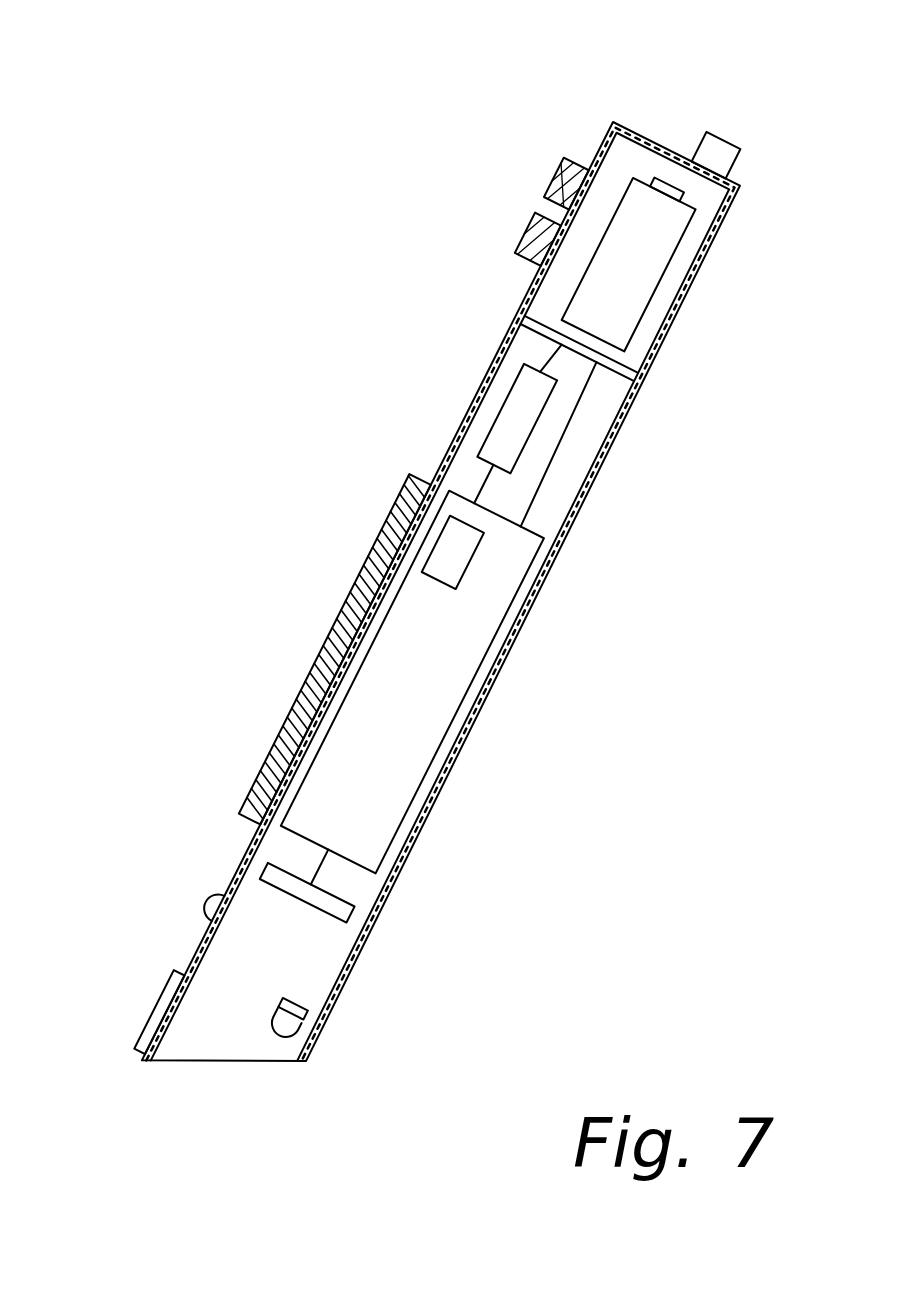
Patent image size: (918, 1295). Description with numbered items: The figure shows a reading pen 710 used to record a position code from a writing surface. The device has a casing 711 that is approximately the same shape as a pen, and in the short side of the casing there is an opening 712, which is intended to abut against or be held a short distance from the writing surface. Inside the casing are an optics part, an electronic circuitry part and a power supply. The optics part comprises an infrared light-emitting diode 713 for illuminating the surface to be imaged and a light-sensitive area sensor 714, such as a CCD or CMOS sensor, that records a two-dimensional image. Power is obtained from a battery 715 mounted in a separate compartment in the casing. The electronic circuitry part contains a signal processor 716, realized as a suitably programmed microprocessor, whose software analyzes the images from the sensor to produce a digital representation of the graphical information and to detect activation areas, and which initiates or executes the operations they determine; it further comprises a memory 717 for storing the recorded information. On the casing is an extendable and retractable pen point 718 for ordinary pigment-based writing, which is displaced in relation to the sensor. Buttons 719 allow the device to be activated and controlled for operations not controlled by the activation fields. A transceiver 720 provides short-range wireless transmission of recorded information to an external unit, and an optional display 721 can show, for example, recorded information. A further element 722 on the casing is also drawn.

The device 710 is at (198, 461).
The casing 711 is at (563, 577).
The opening 712 is at (218, 1062).
The infrared light-emitting diode 713 is at (300, 1040).
The light-sensitive area sensor 714 is at (350, 898).
The battery 715 is at (630, 280).
The signal processor 716 is at (415, 722).
The memory 717 is at (503, 427).
The pen point 718 is at (172, 998).
The buttons 719 is at (556, 183).
The transceiver 720 is at (714, 160).
The display 721 is at (338, 635).
The hook 722 is at (212, 890).